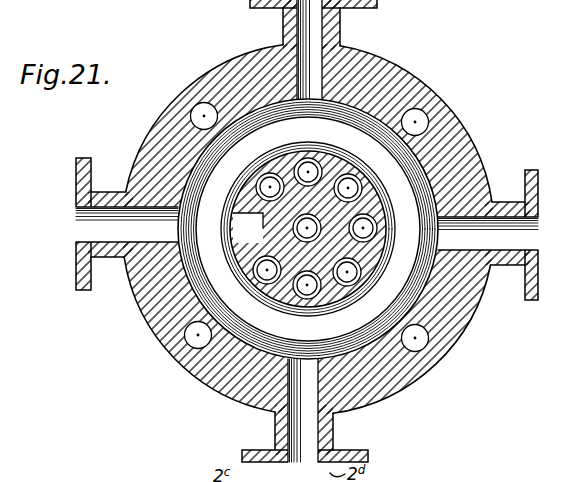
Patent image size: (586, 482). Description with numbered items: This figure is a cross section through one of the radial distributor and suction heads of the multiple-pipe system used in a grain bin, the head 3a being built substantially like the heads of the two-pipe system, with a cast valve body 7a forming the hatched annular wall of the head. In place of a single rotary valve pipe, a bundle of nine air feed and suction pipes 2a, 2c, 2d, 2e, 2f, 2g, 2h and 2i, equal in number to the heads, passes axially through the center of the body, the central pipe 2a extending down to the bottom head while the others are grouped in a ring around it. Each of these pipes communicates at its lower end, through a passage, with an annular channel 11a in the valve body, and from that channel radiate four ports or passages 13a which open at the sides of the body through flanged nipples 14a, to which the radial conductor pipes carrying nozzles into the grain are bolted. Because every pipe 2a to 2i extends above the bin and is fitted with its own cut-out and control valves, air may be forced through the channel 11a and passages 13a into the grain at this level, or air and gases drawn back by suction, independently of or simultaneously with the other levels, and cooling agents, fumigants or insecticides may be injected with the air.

The air feed and suction pipe 2a is at (295, 228).
The air feed and suction pipe 2c is at (265, 174).
The air feed and suction pipe 2d is at (312, 158).
The air feed and suction pipe 2e is at (357, 186).
The air feed and suction pipe 2f is at (377, 228).
The air feed and suction pipe 2g is at (361, 268).
The air feed and suction pipe 2h is at (323, 298).
The air feed and suction pipe 2i is at (267, 283).
The header casing 3a is at (309, 227).
The casing wall 7a is at (452, 123).
The channel 11a is at (213, 281).
The ports or passages 13a is at (310, 30).
The flange 14a is at (367, 10).